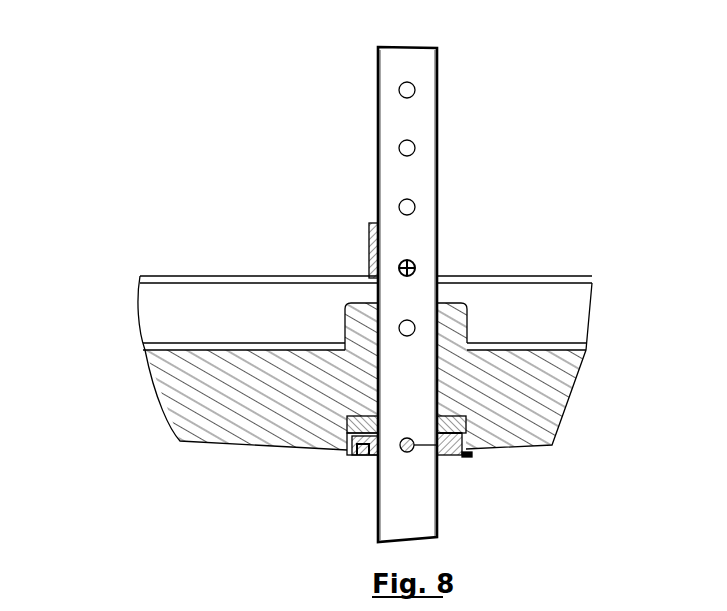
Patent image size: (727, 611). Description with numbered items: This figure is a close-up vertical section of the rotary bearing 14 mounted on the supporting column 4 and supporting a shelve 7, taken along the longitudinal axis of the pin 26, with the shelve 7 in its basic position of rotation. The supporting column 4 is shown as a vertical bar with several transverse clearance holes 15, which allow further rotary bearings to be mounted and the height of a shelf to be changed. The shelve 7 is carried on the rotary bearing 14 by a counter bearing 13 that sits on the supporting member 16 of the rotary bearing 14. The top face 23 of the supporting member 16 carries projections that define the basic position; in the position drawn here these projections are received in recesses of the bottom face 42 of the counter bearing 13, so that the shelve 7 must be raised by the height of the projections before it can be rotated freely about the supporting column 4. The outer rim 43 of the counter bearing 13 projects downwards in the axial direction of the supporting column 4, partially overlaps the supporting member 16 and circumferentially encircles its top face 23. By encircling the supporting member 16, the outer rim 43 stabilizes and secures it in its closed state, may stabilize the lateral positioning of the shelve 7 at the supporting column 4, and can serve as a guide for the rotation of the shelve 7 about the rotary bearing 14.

The supporting column 4 is at (375, 83).
The transverse clearance hole 15 is at (399, 149).
The shelve 7 is at (508, 279).
The counter bearing 13 is at (333, 423).
The top face 23 is at (467, 423).
The supporting member 16 is at (448, 433).
The pin 26 is at (438, 447).
The rotary bearing 14 is at (473, 457).
The bottom face 42 is at (347, 433).
The outer rim 43 is at (347, 450).